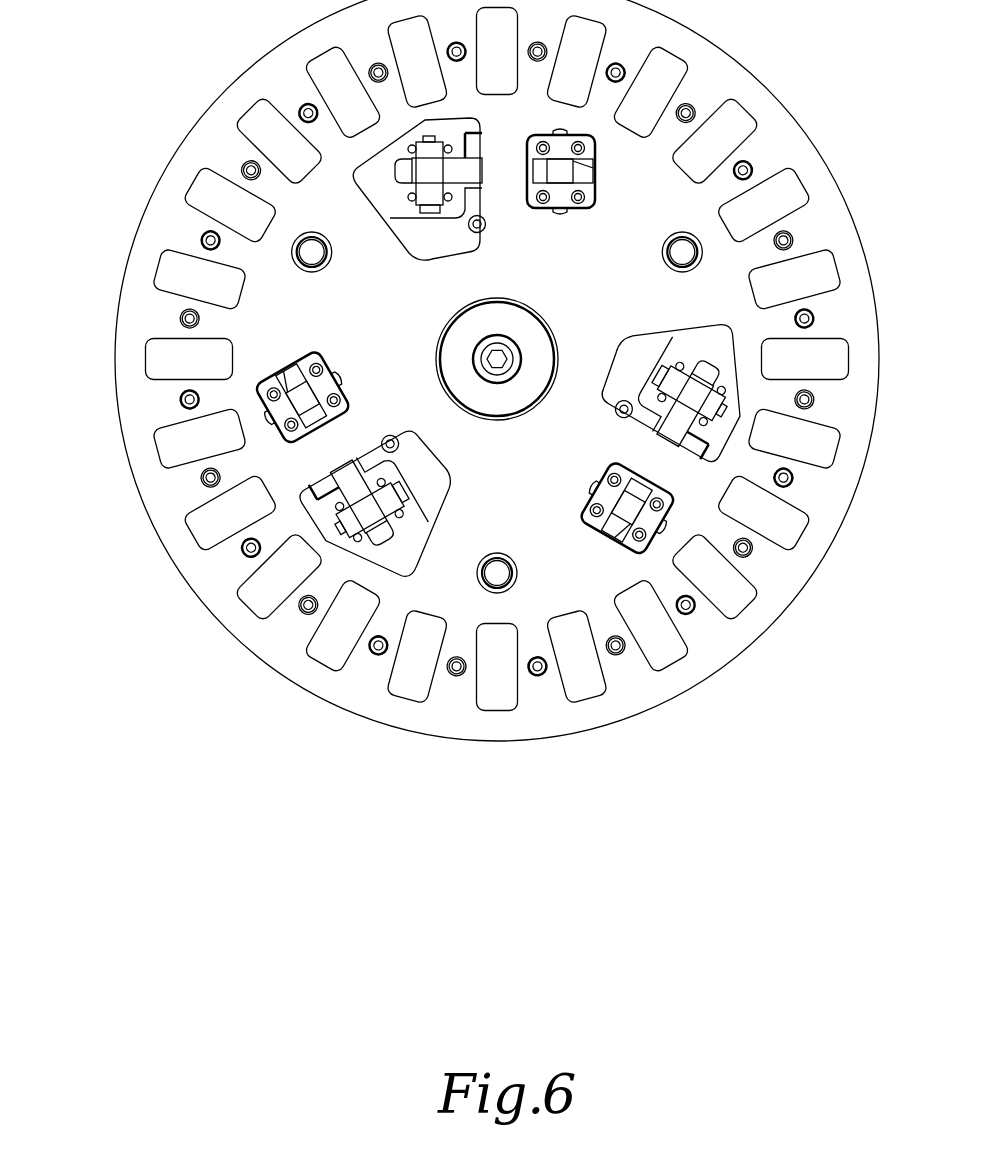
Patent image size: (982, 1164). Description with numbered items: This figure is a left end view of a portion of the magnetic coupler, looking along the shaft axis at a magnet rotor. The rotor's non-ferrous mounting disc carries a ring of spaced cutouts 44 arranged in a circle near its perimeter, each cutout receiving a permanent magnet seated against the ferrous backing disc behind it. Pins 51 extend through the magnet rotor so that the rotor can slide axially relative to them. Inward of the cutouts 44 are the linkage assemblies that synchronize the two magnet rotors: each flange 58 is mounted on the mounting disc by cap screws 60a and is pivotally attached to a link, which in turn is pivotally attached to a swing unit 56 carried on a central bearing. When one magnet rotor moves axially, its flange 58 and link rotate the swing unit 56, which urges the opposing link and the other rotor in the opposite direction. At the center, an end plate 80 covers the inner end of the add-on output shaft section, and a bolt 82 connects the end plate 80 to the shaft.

The cutouts 44 is at (738, 577).
The pins 51 is at (679, 232).
The swing unit 56 is at (308, 494).
The flange 58 is at (262, 387).
The cap screws 60a is at (285, 433).
The end plate 80 is at (436, 360).
The bolt 82 is at (480, 342).